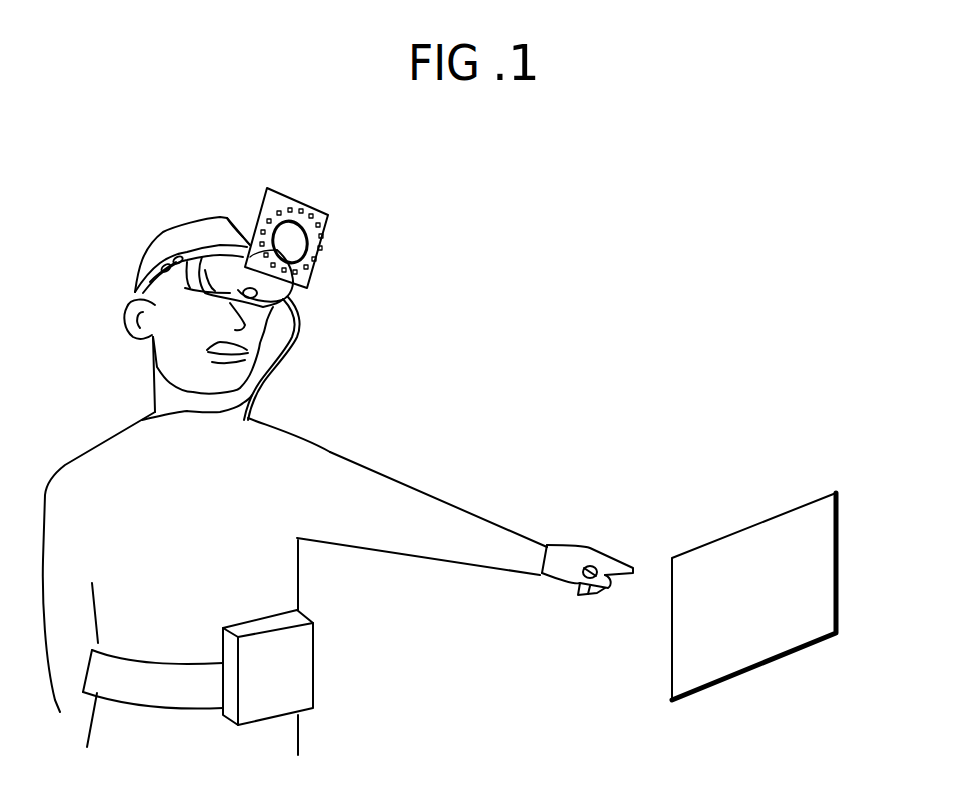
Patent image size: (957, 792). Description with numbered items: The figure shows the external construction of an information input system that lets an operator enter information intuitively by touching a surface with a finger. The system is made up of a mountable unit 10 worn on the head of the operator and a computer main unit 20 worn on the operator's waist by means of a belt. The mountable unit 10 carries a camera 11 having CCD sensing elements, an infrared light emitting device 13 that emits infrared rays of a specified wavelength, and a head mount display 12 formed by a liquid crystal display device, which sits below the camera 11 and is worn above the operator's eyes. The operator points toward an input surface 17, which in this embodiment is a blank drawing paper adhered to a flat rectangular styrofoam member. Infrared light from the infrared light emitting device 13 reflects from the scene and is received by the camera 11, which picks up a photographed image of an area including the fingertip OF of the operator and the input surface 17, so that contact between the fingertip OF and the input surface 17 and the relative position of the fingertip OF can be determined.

The mountable unit 10 is at (351, 205).
The camera 11 is at (329, 219).
The head mount display 12 is at (228, 260).
The infrared light emitting device 13 is at (287, 215).
The input surface 17 is at (822, 558).
The computer main unit 20 is at (300, 658).
The fingertip OF is at (640, 570).